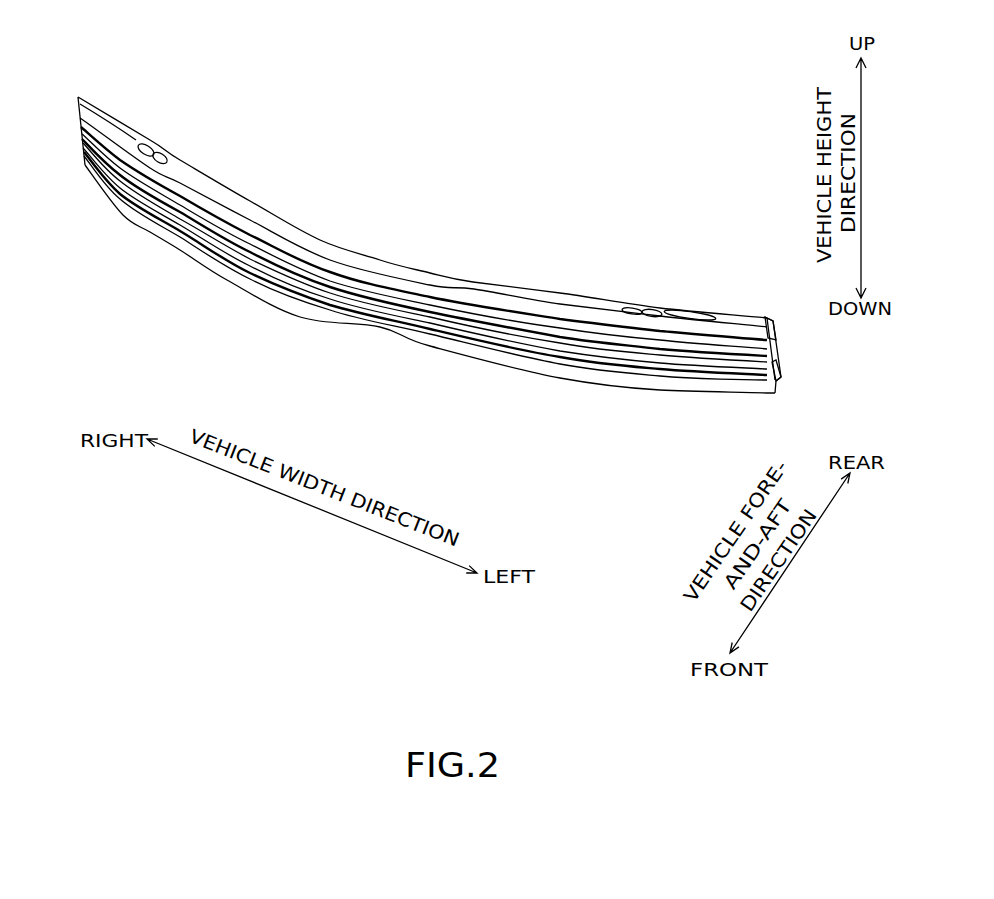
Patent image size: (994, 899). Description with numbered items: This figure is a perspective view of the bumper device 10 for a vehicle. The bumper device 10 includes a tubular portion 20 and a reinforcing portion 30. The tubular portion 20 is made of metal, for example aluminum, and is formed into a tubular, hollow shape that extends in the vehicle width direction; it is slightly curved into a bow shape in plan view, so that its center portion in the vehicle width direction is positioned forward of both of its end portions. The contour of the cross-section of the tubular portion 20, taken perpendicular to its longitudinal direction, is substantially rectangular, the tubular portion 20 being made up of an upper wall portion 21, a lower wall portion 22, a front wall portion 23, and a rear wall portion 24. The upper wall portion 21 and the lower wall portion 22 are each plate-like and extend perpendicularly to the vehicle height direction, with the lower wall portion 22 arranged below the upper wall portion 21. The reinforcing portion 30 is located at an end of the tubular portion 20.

The bumper device 10 is at (247, 325).
The tubular portion 20 is at (572, 288).
The upper wall portion 21 is at (474, 287).
The lower wall portion 22 is at (777, 381).
The front wall portion 23 is at (437, 350).
The rear wall portion 24 is at (773, 336).
The reinforcing portion 30 is at (793, 366).